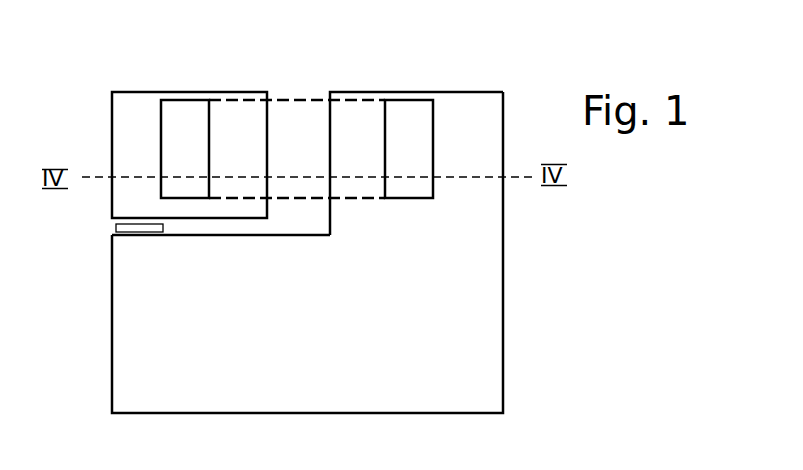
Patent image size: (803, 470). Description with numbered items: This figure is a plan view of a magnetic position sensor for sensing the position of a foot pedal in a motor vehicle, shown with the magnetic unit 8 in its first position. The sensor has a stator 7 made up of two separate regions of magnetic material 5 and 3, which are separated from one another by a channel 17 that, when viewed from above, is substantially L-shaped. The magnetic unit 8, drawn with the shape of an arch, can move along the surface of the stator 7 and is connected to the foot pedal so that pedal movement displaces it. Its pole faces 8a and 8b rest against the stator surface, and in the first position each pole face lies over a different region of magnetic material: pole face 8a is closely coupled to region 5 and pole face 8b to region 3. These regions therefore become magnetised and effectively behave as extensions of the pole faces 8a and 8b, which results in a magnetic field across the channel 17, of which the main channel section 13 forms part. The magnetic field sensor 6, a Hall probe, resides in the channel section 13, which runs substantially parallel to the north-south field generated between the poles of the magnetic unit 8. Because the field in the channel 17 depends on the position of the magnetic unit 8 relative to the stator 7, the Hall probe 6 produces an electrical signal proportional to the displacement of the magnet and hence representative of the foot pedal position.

The region of magnetic material 3 is at (488, 262).
The region of magnetic material 5 is at (128, 154).
The magnetic field sensor 6 is at (117, 228).
The stator 7 is at (369, 252).
The magnetic unit 8 is at (391, 99).
The pole face 8a is at (189, 110).
The pole face 8b is at (402, 110).
The main channel section 13 is at (212, 227).
The channel 17 is at (286, 221).